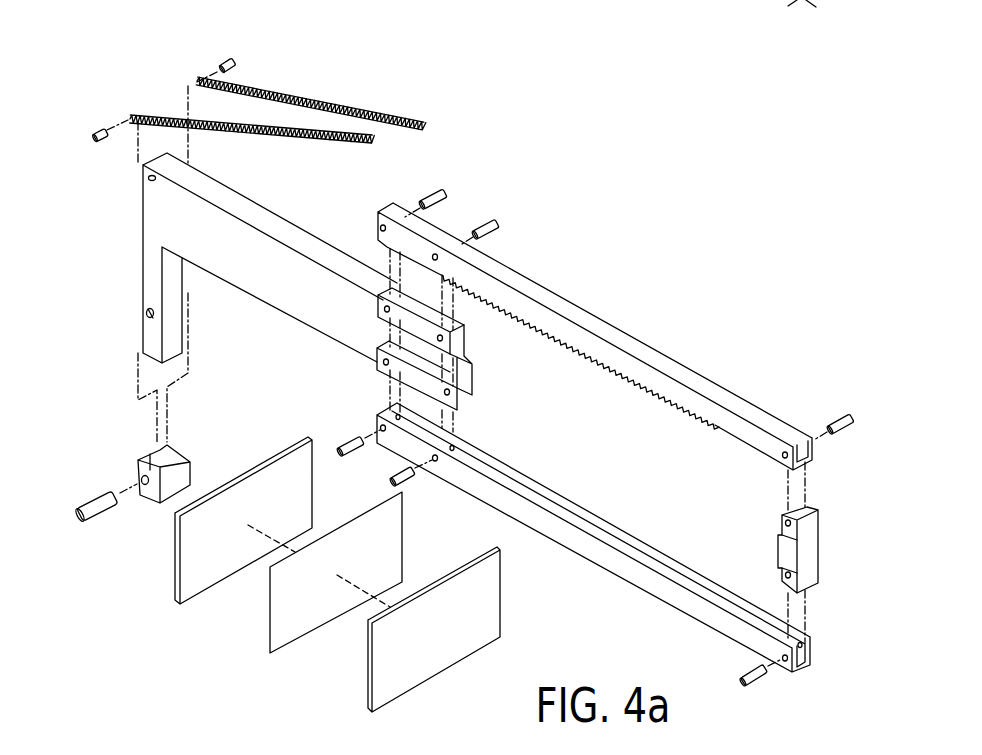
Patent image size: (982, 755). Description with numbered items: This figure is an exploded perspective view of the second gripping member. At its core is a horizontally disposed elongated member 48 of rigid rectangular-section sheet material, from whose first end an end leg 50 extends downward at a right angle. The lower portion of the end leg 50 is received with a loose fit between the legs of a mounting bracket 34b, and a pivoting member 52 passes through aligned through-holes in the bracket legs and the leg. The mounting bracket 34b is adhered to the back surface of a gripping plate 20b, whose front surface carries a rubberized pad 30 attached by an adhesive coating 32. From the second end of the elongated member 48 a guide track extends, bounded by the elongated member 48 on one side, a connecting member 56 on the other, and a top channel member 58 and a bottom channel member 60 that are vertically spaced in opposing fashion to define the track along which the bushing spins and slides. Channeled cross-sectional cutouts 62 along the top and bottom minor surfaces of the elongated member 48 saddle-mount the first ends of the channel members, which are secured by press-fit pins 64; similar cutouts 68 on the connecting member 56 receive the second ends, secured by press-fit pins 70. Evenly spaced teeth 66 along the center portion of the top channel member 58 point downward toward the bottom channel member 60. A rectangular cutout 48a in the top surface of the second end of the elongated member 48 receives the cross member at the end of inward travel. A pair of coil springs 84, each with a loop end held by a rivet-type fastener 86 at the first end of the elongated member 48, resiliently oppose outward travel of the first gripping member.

The gripping plate 20b is at (177, 578).
The rubberized pad 30 is at (368, 690).
The adhesive coating 32 is at (268, 640).
The mounting bracket 34b is at (186, 452).
The elongated member 48 is at (278, 310).
The rectangular cutout 48a is at (478, 370).
The end leg 50 is at (152, 327).
The pivoting member 52 is at (97, 500).
The connecting member 56 is at (818, 556).
The top channel member 58 is at (633, 335).
The bottom channel member 60 is at (607, 567).
The channeled cross-sectional cutouts 62 is at (393, 318).
The press-fit pins 64 is at (447, 192).
The teeth 66 is at (655, 395).
The channeled cross-sectional cutouts 68 is at (784, 515).
The press-fit pins 70 is at (843, 420).
The coil springs 84 is at (361, 110).
The rivet-type fasteners 86 is at (228, 58).